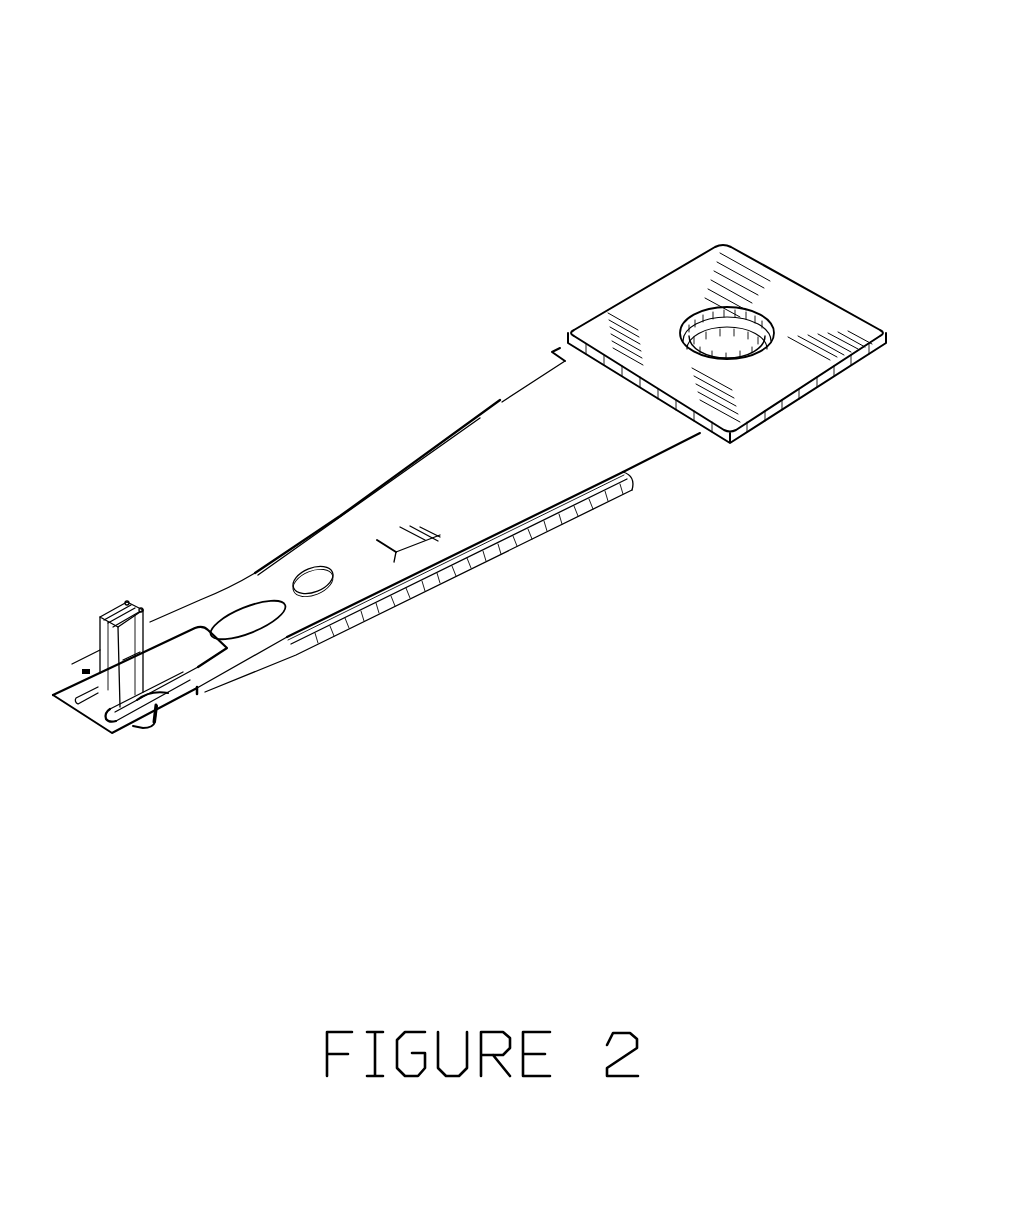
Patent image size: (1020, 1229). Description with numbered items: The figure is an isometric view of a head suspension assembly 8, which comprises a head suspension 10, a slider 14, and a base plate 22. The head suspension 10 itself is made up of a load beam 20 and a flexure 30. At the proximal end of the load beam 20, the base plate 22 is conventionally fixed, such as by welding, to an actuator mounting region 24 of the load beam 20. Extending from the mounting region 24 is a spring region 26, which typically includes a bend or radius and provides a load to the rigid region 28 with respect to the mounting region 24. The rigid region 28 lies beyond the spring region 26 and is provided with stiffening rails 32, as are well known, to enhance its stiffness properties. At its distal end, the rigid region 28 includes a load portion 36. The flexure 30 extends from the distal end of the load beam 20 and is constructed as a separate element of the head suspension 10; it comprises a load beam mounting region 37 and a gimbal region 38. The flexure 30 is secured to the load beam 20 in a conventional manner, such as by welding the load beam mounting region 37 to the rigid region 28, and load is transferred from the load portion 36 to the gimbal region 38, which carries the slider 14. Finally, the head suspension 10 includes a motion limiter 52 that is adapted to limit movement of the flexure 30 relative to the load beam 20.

The head suspension assembly 8 is at (717, 192).
The head suspension 10 is at (717, 482).
The slider 14 is at (118, 602).
The load beam 20 is at (490, 489).
The base plate 22 is at (800, 302).
The actuator mounting region 24 is at (560, 348).
The spring region 26 is at (553, 402).
The rigid region 28 is at (377, 513).
The flexure 30 is at (263, 638).
The stiffening rails 32 is at (484, 408).
The load portion 36 is at (177, 677).
The load beam mounting region 37 is at (352, 553).
The gimbal region 38 is at (100, 705).
The motion limiter 52 is at (168, 753).